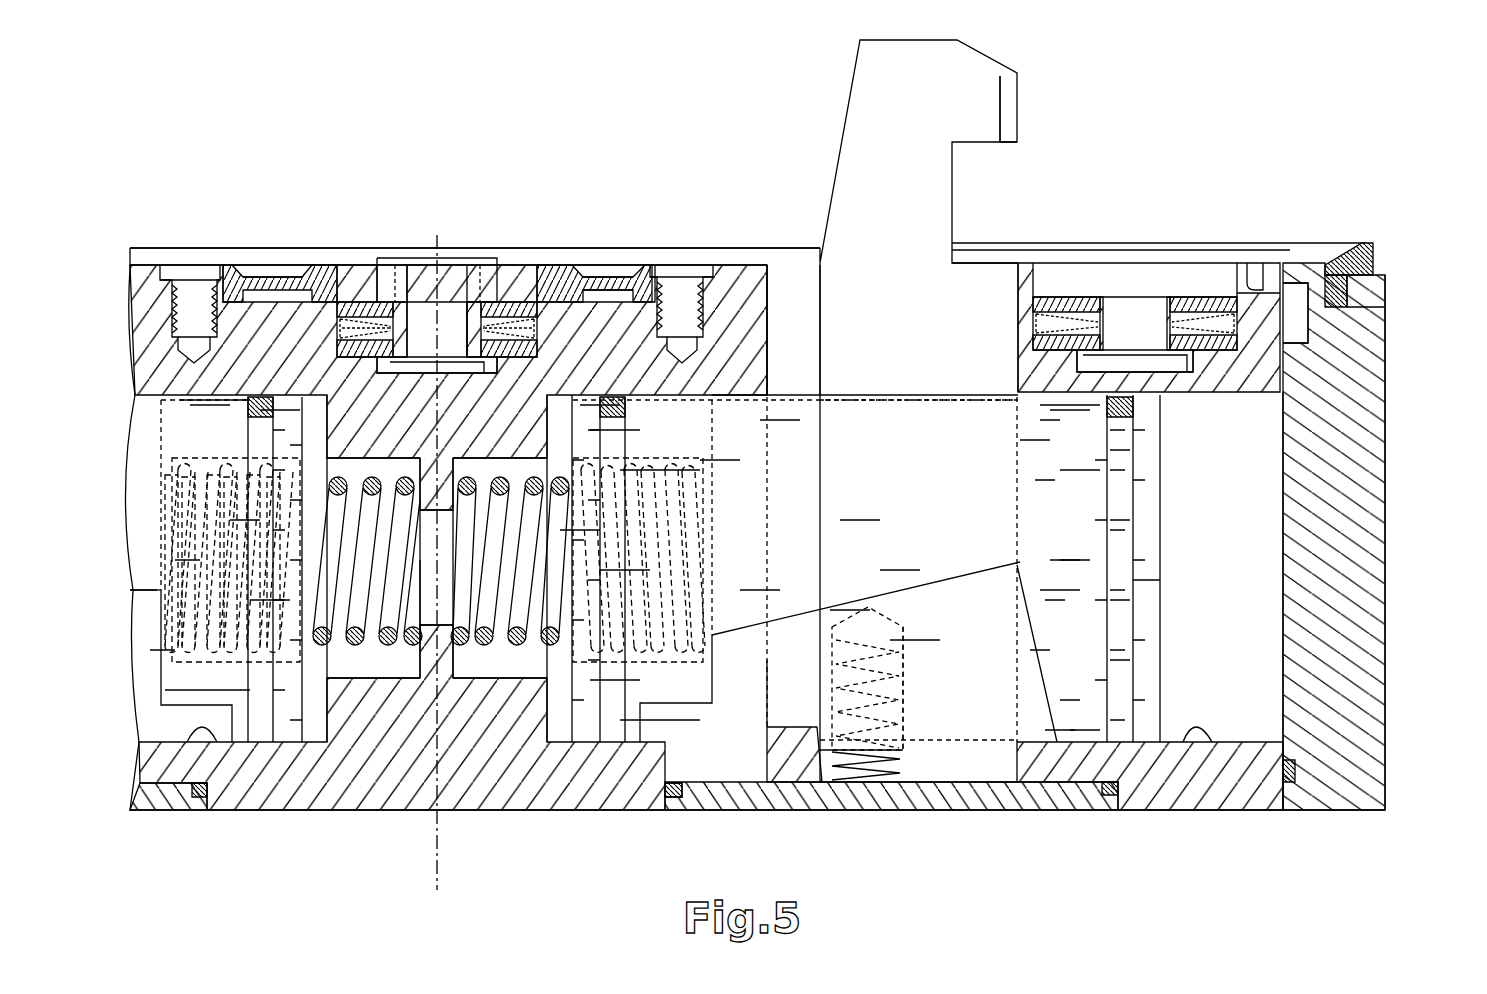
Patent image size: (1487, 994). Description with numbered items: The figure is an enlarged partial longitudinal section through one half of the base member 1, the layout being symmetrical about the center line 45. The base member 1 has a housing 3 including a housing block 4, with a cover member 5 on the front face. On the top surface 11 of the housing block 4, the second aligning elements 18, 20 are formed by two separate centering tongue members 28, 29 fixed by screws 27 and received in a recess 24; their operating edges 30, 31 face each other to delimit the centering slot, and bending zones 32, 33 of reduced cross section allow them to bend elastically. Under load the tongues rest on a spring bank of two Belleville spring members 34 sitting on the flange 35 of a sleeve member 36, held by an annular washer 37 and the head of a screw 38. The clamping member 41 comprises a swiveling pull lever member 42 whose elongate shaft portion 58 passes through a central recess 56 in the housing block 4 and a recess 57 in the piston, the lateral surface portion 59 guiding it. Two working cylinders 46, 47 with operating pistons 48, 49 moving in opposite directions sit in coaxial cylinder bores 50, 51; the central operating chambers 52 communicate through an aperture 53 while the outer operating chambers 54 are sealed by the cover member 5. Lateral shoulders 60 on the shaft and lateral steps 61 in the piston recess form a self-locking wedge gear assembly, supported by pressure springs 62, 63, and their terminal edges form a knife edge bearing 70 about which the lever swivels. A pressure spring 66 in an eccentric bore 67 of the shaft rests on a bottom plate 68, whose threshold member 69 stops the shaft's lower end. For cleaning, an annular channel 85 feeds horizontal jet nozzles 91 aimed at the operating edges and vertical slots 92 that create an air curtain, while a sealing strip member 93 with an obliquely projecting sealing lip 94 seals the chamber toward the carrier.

The base member 1 is at (1405, 368).
The housing 3 is at (1390, 495).
The housing block 4 is at (625, 785).
The cover member 5 is at (1343, 445).
The top surface 11 is at (142, 262).
The second aligning element 18 is at (442, 185).
The second aligning element 20 is at (1120, 235).
The recess 24 is at (662, 262).
The screw 27 is at (195, 290).
The centering tongue member 28 is at (350, 350).
The centering tongue member 29 is at (605, 275).
The operating edge 30 is at (393, 290).
The operating edge 31 is at (485, 288).
The bending zone 32 is at (235, 282).
The bending zone 33 is at (613, 297).
The Belleville spring member 34 is at (352, 323).
The flange 35 is at (557, 280).
The sleeve member 36 is at (457, 327).
The annular washer 37 is at (265, 285).
The screw 38 is at (423, 313).
The clamping member 41 is at (820, 150).
The pull lever member 42 is at (965, 105).
The center line 45 is at (432, 830).
The working cylinder 46 is at (150, 662).
The working cylinder 47 is at (1210, 630).
The operating piston 48 is at (180, 690).
The operating piston 49 is at (1070, 697).
The cylinder bore 50 is at (215, 745).
The cylinder bore 51 is at (1192, 722).
The operating chamber 52 is at (315, 720).
The aperture 53 is at (440, 597).
The operating chamber 54 is at (1250, 695).
The central recess 56 is at (787, 290).
The recess 57 is at (703, 550).
The shaft portion 58 is at (943, 355).
The lateral surface portion 59 is at (1018, 323).
The lateral shoulder 60 is at (972, 565).
The lateral step 61 is at (735, 600).
The pressure spring 62 is at (350, 690).
The pressure spring 63 is at (513, 650).
The pressure spring 66 is at (868, 762).
The bore 67 is at (907, 680).
The bottom plate 68 is at (172, 803).
The threshold member 69 is at (790, 765).
The knife edge bearing 70 is at (1020, 562).
The annular channel 85 is at (1335, 292).
The jet nozzle 91 is at (400, 280).
The vertical slot 92 is at (1300, 300).
The sealing strip member 93 is at (1368, 287).
The sealing lip 94 is at (1355, 258).